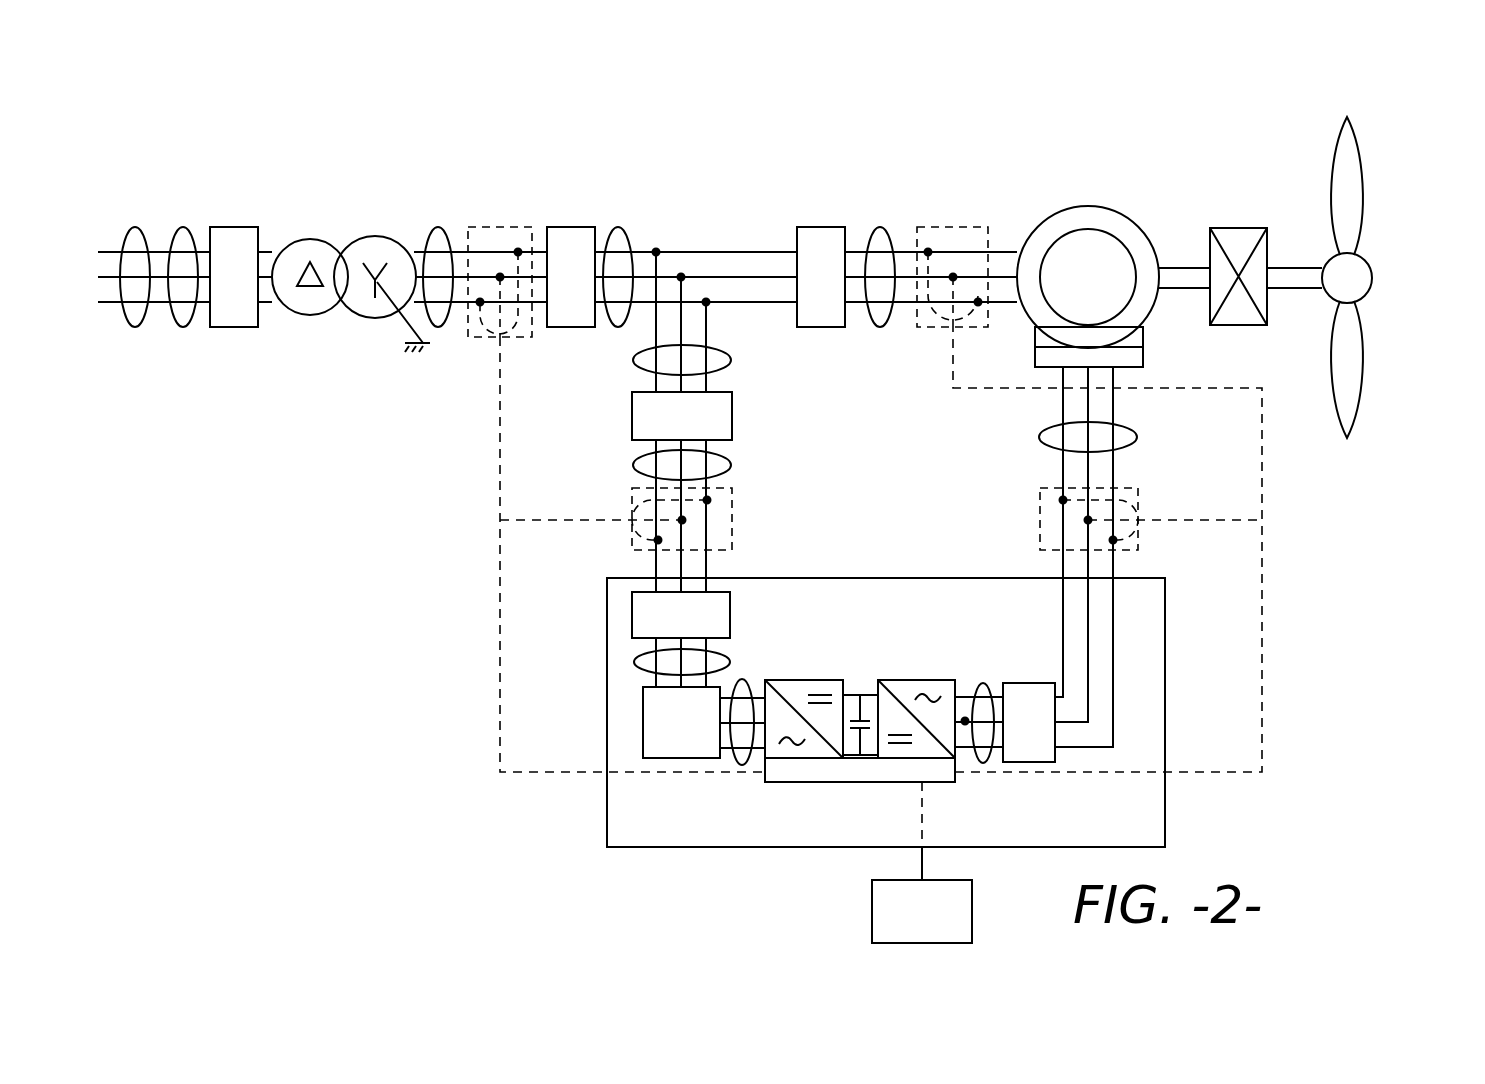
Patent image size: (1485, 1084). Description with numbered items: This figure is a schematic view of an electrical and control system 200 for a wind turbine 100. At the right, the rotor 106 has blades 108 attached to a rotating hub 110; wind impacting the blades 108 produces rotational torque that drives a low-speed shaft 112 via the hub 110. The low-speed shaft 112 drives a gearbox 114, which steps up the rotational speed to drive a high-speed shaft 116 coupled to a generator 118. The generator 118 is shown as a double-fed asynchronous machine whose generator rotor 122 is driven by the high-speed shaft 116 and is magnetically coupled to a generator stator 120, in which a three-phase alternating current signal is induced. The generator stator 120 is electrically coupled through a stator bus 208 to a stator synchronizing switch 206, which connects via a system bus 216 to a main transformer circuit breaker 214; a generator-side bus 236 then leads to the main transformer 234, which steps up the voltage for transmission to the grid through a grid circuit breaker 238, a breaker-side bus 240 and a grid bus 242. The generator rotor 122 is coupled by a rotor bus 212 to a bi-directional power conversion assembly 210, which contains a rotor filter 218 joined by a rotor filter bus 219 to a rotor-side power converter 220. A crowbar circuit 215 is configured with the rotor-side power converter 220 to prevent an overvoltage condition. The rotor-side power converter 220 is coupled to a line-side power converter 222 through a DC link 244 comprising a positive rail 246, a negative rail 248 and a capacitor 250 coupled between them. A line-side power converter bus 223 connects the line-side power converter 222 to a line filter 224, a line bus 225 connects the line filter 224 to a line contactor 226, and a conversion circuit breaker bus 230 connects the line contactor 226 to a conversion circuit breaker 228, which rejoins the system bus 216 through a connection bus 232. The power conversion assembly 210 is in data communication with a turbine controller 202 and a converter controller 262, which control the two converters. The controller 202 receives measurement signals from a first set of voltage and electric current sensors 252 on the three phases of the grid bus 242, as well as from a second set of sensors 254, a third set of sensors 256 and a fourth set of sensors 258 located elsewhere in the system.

The wind turbine 100 is at (1303, 121).
The rotor 106 is at (1371, 247).
The blades 108 is at (1362, 182).
The hub 110 is at (1373, 270).
The low-speed shaft 112 is at (1280, 265).
The gearbox 114 is at (1237, 228).
The high-speed shaft 116 is at (1197, 267).
The generator 118 is at (1083, 180).
The generator stator 120 is at (1113, 207).
The generator rotor 122 is at (1063, 252).
The electrical and control system 200 is at (332, 147).
The turbine controller 202 is at (898, 928).
The stator synchronizing switch 206 is at (820, 227).
The stator bus 208 is at (882, 227).
The power conversion assembly 210 is at (1165, 682).
The rotor bus 212 is at (1140, 437).
The main transformer circuit breaker 214 is at (567, 227).
The crowbar circuit 215 is at (963, 722).
The system bus 216 is at (617, 227).
The rotor filter 218 is at (1022, 683).
The rotor filter bus 219 is at (978, 680).
The rotor-side power converter 220 is at (965, 720).
The line-side power converter 222 is at (760, 760).
The line-side power converter bus 223 is at (743, 677).
The line filter 224 is at (643, 737).
The line bus 225 is at (633, 667).
The line contactor 226 is at (632, 620).
The conversion circuit breaker 228 is at (732, 415).
The conversion circuit breaker bus 230 is at (732, 467).
The connection bus 232 is at (762, 344).
The main transformer 234 is at (370, 238).
The generator-side bus 236 is at (438, 227).
The grid circuit breaker 238 is at (242, 227).
The breaker-side bus 240 is at (183, 227).
The grid bus 242 is at (133, 227).
The DC link 244 is at (867, 640).
The positive rail 246 is at (863, 693).
The negative rail 248 is at (863, 783).
The capacitor 250 is at (857, 720).
The first set of voltage and electric current sensors 252 is at (492, 227).
The second set of voltage and electric current sensors 254 is at (952, 209).
The third set of voltage and electric current sensors 256 is at (1040, 520).
The fourth set of voltage and electric current sensors 258 is at (732, 530).
The converter controller 262 is at (833, 772).